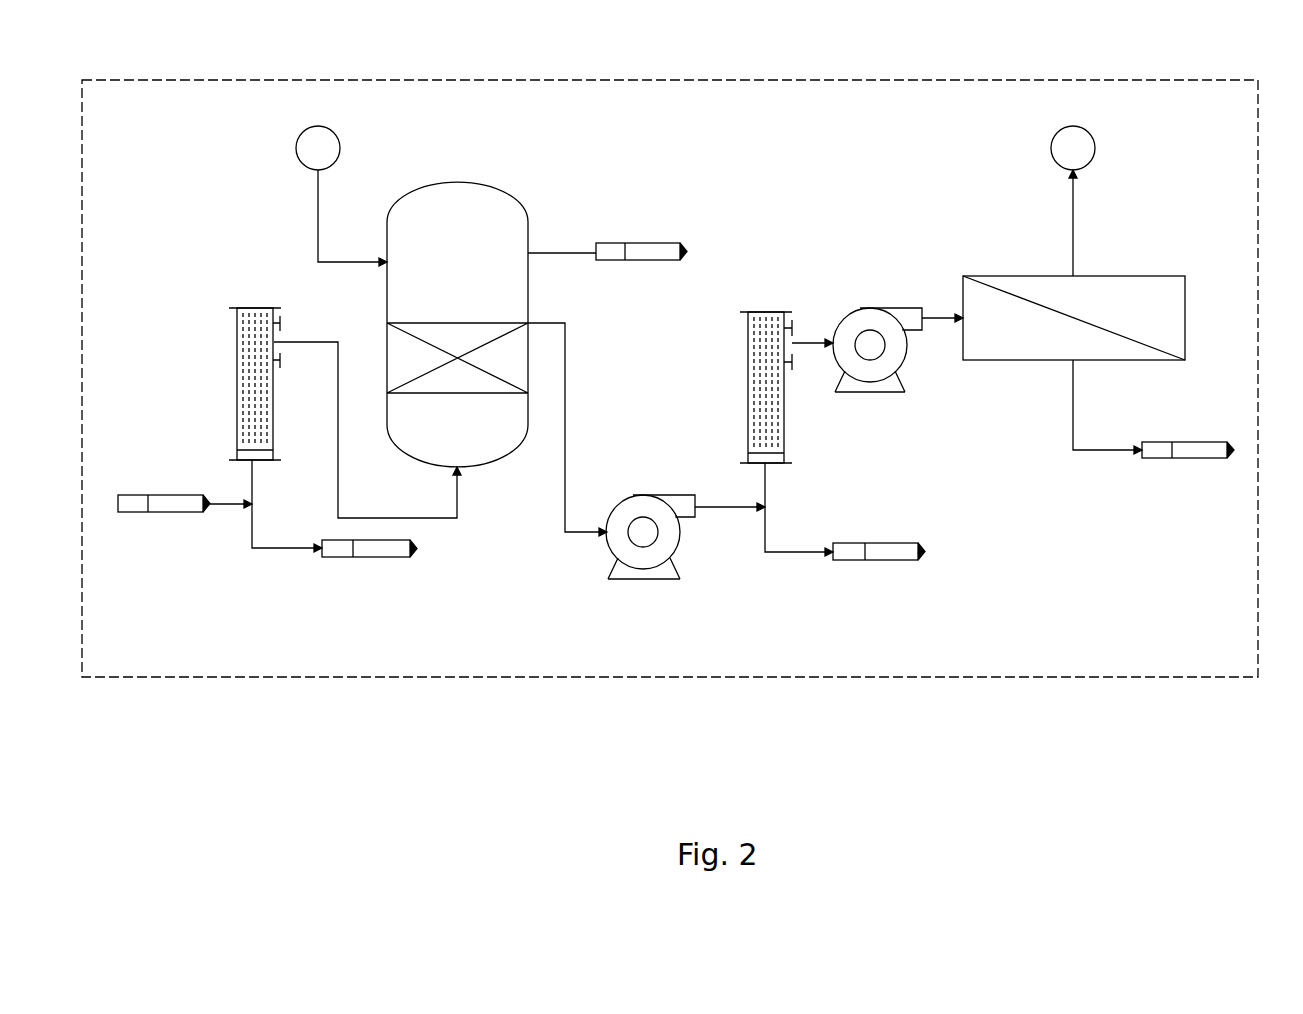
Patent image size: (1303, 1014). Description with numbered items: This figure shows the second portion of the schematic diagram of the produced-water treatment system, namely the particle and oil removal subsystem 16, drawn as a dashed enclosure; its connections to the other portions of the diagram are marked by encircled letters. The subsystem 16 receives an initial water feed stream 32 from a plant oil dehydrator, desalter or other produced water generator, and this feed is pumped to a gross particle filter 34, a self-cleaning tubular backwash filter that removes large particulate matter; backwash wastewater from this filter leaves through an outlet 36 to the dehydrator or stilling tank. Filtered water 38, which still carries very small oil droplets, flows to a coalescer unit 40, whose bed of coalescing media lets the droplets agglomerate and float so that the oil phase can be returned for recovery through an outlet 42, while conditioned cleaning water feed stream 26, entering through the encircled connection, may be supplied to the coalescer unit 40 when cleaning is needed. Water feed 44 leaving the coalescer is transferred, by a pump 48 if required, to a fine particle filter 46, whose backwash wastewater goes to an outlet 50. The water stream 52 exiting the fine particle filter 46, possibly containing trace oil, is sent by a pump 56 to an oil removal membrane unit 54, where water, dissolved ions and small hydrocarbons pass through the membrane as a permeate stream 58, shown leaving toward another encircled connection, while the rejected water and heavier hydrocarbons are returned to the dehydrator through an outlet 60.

The particle and oil removal subsystem 16 is at (700, 80).
The conditioned cleaning water feed stream 26 is at (318, 190).
The initial water feed stream 32 is at (170, 513).
The gross particle filter 34 is at (237, 335).
The outlet 36 is at (376, 558).
The filtered water 38 is at (322, 342).
The coalescer unit 40 is at (498, 185).
The outlet 42 is at (655, 243).
The water feed 44 is at (565, 392).
The fine particle filter 46 is at (748, 338).
The pump 48 is at (648, 553).
The outlet 50 is at (890, 548).
The water stream 52 is at (803, 342).
The oil removal membrane unit 54 is at (1018, 283).
The pump 56 is at (875, 318).
The permeate stream 58 is at (1073, 217).
The outlet 60 is at (1207, 445).